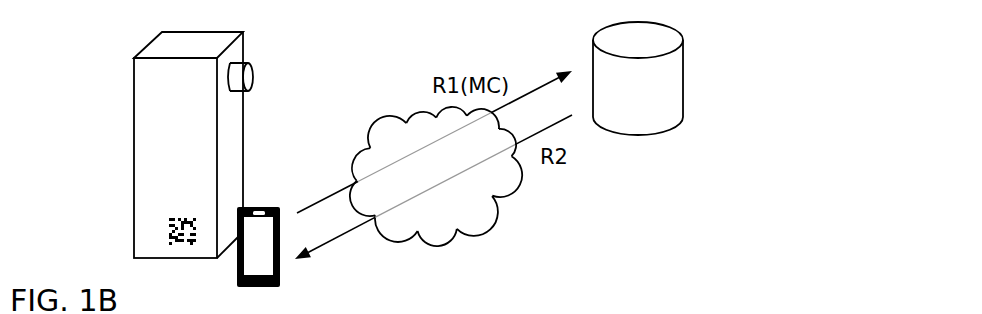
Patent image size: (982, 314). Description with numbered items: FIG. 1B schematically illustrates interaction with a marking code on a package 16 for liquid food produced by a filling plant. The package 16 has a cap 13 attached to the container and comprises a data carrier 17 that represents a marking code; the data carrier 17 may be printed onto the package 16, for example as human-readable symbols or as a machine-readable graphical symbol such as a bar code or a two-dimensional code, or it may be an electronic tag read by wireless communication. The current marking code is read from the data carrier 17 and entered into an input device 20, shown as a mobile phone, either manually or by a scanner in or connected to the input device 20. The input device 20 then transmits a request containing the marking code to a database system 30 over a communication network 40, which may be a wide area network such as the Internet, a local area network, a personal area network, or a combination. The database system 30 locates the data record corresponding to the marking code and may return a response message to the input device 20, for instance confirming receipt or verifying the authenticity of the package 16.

The cap 13 is at (245, 62).
The package 16 is at (227, 130).
The data carrier 17 is at (168, 227).
The input device 20 is at (280, 274).
The database system 30 is at (650, 96).
The communication network 40 is at (448, 178).